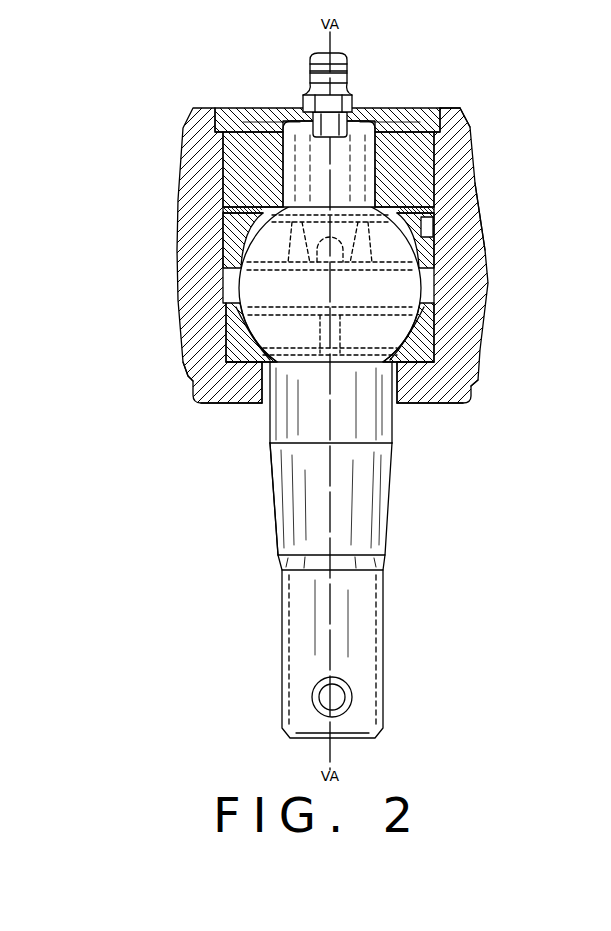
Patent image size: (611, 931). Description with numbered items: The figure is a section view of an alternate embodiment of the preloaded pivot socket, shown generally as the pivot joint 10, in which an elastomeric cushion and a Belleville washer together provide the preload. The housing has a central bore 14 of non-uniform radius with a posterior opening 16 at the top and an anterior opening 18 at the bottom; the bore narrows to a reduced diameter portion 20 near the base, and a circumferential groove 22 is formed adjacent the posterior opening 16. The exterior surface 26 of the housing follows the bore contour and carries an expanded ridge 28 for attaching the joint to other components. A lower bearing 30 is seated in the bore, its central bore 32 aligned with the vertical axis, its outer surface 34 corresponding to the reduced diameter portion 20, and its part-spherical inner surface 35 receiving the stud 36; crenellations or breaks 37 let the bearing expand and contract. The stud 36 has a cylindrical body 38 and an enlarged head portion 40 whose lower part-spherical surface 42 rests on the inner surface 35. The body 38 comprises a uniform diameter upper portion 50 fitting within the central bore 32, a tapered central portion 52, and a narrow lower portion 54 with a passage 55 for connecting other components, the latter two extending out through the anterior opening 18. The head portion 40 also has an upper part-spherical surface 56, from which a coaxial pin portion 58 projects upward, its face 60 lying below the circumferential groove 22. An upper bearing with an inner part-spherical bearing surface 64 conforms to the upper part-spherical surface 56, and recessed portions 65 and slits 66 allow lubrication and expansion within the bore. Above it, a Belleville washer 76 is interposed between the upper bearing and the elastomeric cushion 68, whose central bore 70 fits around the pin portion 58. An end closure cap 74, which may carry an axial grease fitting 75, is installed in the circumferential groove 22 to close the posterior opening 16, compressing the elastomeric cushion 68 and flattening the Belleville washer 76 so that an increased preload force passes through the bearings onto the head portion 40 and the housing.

The pivot joint 10 is at (226, 74).
The central bore 14 is at (214, 288).
The posterior opening 16 is at (403, 120).
The anterior opening 18 is at (400, 408).
The reduced diameter portion 20 is at (214, 332).
The circumferential groove 22 is at (460, 125).
The exterior surface 26 is at (174, 190).
The expanded ridge 28 is at (163, 240).
The lower bearing 30 is at (190, 357).
The central bore 32 is at (430, 378).
The outer surface 34 is at (443, 334).
The inner surface 35 is at (436, 338).
The stud 36 is at (402, 505).
The crenellations or breaks 37 is at (323, 337).
The cylindrical body 38 is at (367, 527).
The head portion 40 is at (180, 313).
The lower part-spherical surface 42 is at (200, 386).
The upper portion 50 is at (364, 422).
The tapered central portion 52 is at (273, 477).
The lower portion 54 is at (383, 608).
The passage 55 is at (340, 697).
The upper part-spherical surface 56 is at (418, 226).
The pin portion 58 is at (376, 142).
The face 60 is at (278, 118).
The inner part-spherical bearing surface 64 is at (284, 241).
The recessed portions 65 is at (440, 316).
The slits 66 is at (400, 248).
The elastomeric cushion 68 is at (468, 160).
The central bore 70 is at (266, 171).
The end closure cap 74 is at (440, 107).
The grease fitting 75 is at (348, 50).
The Belleville washer 76 is at (445, 185).